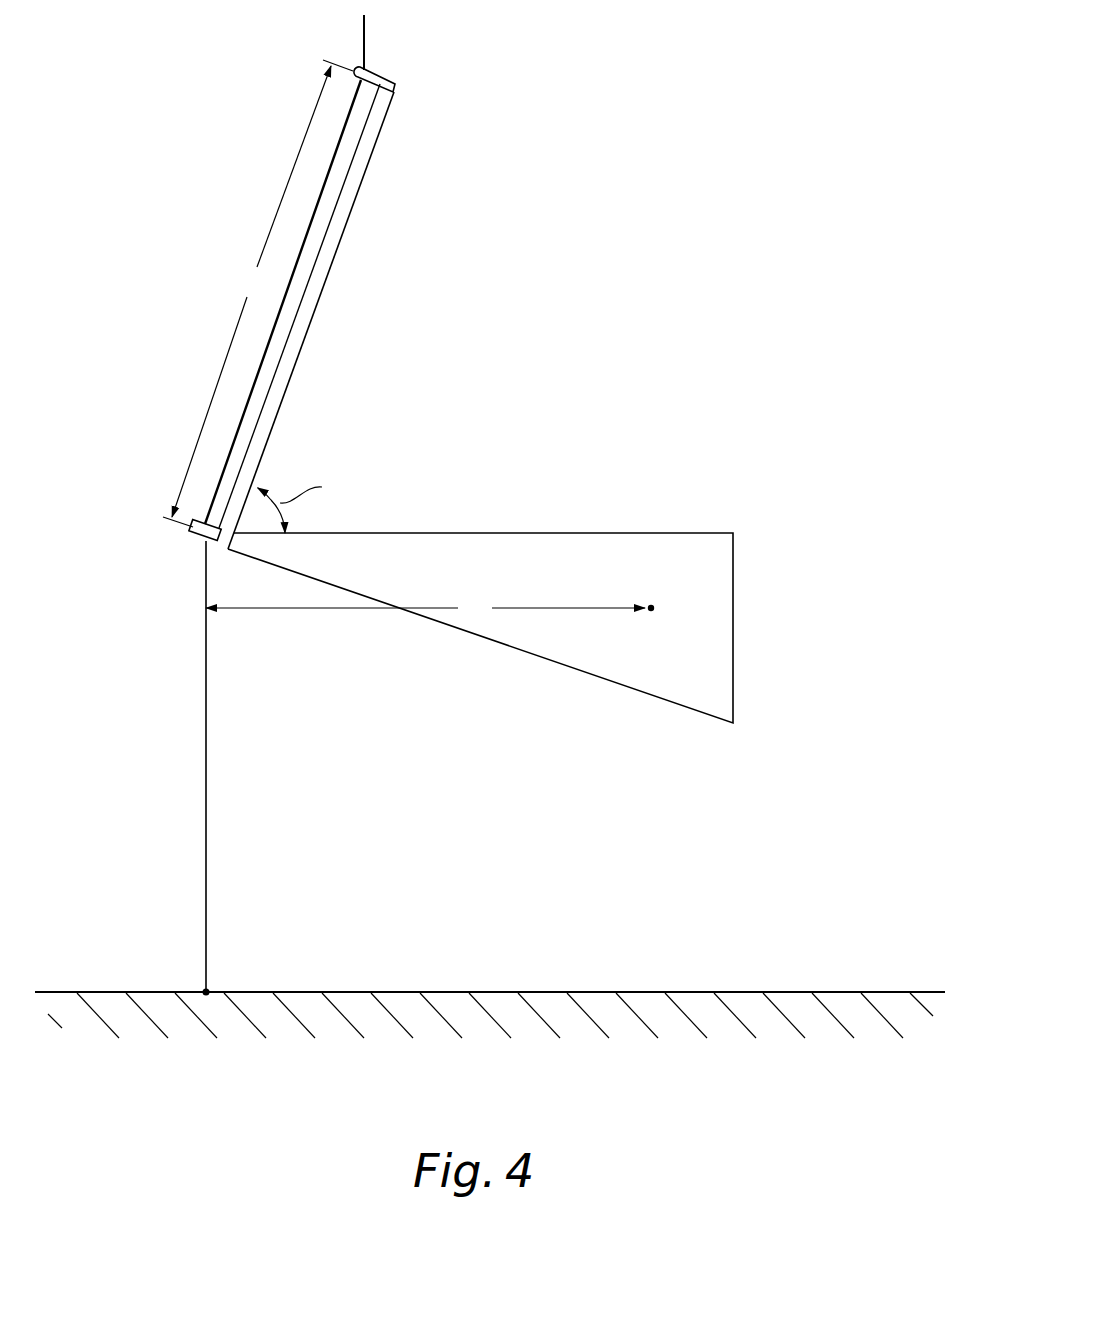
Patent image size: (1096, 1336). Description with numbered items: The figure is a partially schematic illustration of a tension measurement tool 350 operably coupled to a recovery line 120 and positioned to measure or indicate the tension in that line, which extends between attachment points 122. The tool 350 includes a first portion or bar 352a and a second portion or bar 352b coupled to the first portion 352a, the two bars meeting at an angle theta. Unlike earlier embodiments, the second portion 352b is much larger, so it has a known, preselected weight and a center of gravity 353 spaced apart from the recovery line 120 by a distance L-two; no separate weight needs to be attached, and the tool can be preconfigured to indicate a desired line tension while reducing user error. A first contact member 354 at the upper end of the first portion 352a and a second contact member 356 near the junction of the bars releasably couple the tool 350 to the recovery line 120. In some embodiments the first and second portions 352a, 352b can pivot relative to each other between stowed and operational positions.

The recovery line 120 is at (365, 40).
The attachment point 122 is at (205, 996).
The tension measurement tool 350 is at (608, 335).
The first portion 352a is at (338, 250).
The second portion 352b is at (547, 533).
The center of gravity 353 is at (651, 611).
The first contact member 354 is at (400, 70).
The second contact member 356 is at (195, 540).